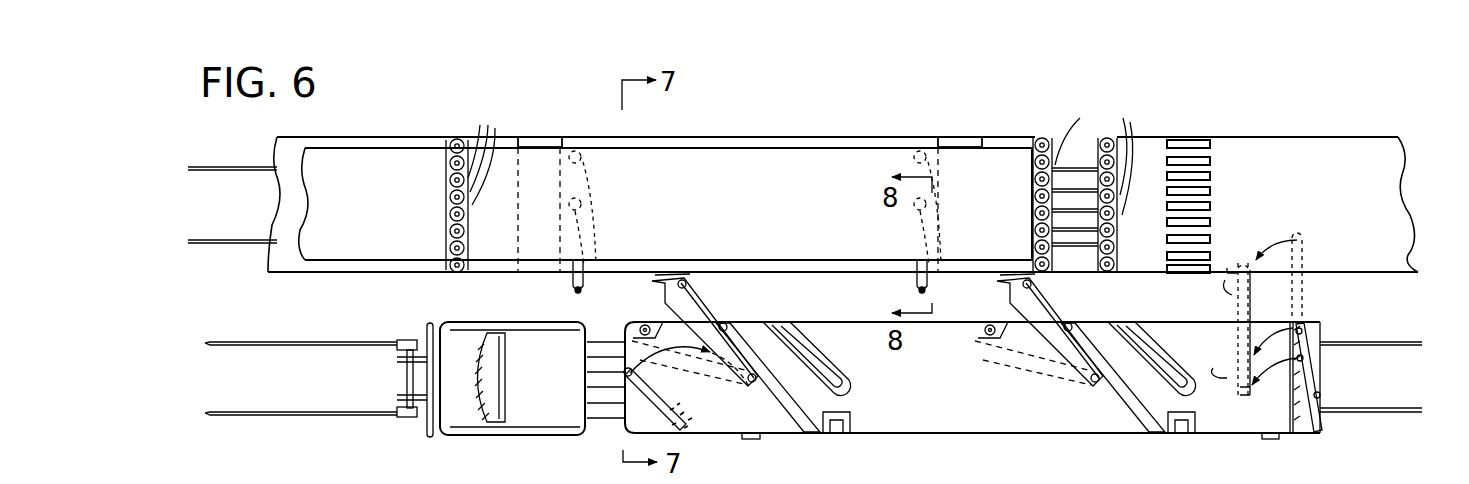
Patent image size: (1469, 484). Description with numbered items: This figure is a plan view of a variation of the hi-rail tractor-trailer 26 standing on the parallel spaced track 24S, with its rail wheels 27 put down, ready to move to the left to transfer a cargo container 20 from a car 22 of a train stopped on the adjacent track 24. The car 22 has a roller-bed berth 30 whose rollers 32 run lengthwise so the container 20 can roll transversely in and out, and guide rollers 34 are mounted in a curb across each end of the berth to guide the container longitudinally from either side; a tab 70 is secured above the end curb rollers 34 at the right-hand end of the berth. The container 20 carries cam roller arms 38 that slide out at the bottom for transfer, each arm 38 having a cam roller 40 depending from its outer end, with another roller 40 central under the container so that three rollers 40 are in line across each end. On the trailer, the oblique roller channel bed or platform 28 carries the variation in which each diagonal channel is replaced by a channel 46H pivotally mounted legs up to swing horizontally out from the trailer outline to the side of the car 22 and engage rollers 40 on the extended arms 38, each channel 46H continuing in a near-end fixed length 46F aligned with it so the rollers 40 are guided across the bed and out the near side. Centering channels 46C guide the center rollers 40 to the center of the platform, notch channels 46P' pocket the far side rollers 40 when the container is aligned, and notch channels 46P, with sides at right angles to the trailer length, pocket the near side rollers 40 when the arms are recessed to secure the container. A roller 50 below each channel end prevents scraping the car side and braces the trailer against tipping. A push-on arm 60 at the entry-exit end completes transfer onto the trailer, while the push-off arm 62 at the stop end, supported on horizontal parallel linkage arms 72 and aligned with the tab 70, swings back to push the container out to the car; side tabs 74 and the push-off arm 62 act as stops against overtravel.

The cargo container 20 is at (330, 150).
The car 22 is at (667, 137).
The track 24 is at (250, 172).
The parallel spaced track 24S is at (305, 410).
The hi-rail tractor-trailer 26 is at (525, 435).
The rail wheels 27 is at (395, 410).
The platform 28 is at (1313, 332).
The berth 30 is at (1340, 150).
The rollers 32 is at (540, 137).
The guide rollers 34 is at (799, 155).
The cam roller arms 38 is at (568, 282).
The cam roller 40 is at (940, 132).
The center channels 46C is at (760, 320).
The fixed channel length 46F is at (808, 432).
The pivoted channel 46H is at (718, 292).
The pocket recess channels 46P is at (1033, 445).
The pocket recess channels 46P' is at (1032, 314).
The roller 50 is at (687, 273).
The push-on arm 60 is at (655, 398).
The push-off arm 62 is at (1302, 433).
The tab 70 is at (448, 145).
The horizontal parallel linkage arms 72 is at (1320, 395).
The side tabs 74 is at (753, 439).